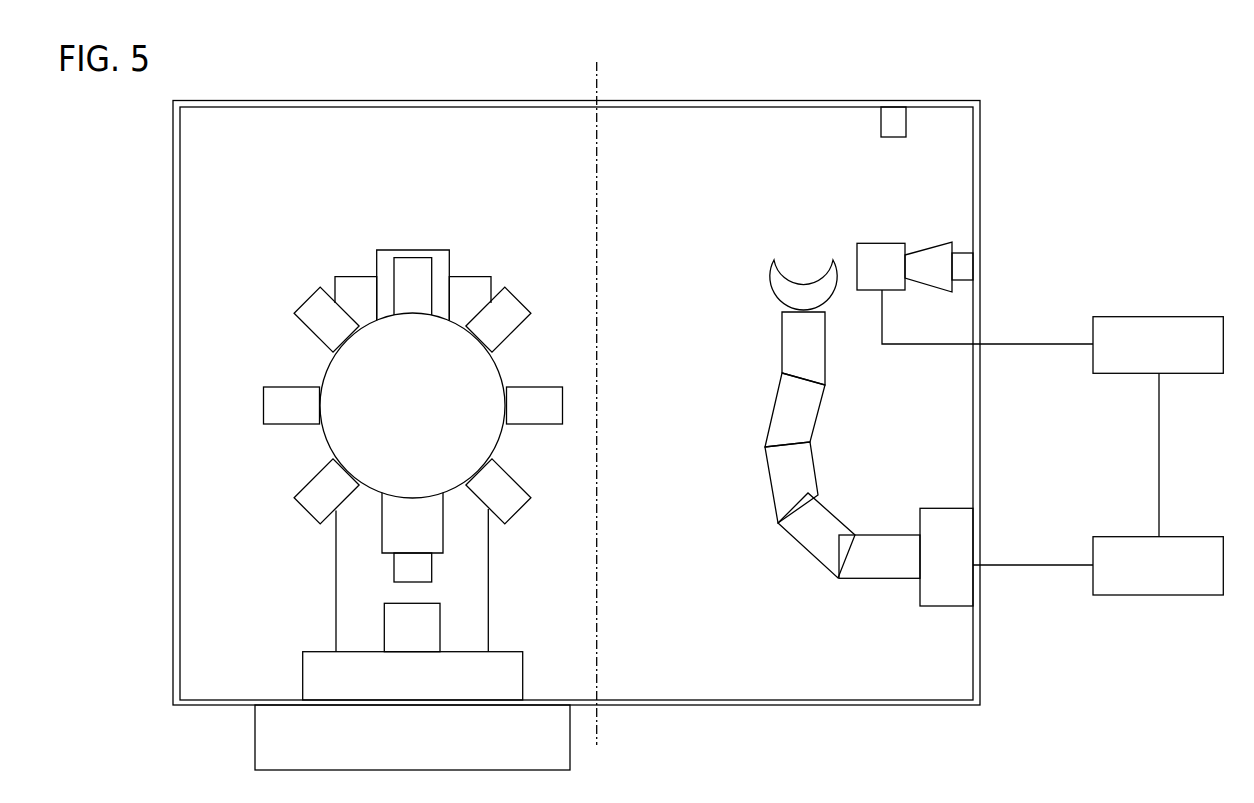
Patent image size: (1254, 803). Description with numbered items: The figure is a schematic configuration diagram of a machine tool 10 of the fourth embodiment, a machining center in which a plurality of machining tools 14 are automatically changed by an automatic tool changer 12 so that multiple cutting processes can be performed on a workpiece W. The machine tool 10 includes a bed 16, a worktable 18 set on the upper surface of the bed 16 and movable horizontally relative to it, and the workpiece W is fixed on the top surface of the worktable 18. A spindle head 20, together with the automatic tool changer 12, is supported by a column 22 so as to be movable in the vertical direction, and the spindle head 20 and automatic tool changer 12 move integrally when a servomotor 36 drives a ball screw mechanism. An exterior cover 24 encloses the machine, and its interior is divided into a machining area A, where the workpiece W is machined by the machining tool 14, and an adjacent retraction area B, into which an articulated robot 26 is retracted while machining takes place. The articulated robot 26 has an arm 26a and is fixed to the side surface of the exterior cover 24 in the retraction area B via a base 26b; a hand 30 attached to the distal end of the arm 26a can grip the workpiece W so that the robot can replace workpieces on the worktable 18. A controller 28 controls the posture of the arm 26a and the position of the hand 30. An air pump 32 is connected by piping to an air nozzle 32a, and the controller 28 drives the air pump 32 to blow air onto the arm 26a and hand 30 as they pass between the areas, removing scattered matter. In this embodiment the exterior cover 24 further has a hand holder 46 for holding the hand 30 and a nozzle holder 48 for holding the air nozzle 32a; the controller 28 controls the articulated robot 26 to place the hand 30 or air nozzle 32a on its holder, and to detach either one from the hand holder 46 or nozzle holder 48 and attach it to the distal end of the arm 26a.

The machine tool 10 is at (963, 76).
The automatic tool changer 12 is at (342, 372).
The machining tool 14 is at (405, 567).
The bed 16 is at (275, 741).
The worktable 18 is at (322, 679).
The spindle head 20 is at (413, 524).
The column 22 is at (359, 290).
The exterior cover 24 is at (173, 285).
The articulated robot 26 is at (857, 440).
The arm 26a is at (872, 563).
The base 26b is at (953, 528).
The controller 28 is at (1157, 596).
The hand 30 is at (790, 293).
The air pump 32 is at (1152, 317).
The air nozzle 32a is at (875, 253).
The servomotor 36 is at (412, 255).
The hand holder 46 is at (893, 119).
The nozzle holder 48 is at (963, 267).
The machining area A is at (194, 338).
The retraction area B is at (950, 644).
The workpiece W is at (395, 620).